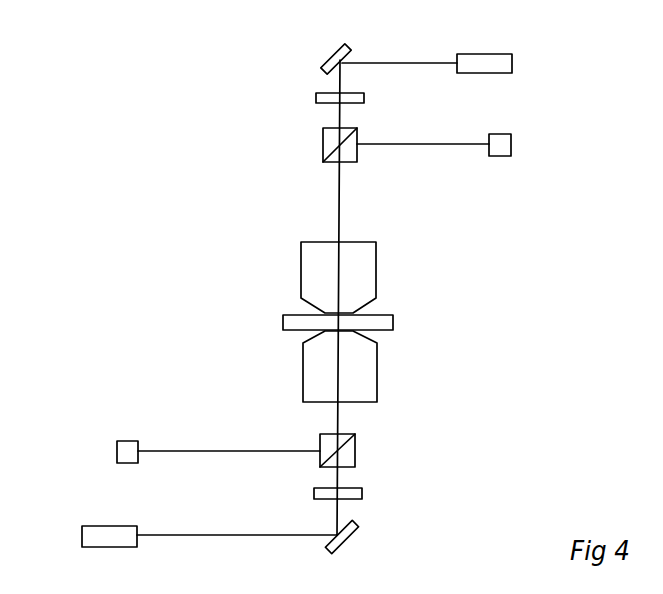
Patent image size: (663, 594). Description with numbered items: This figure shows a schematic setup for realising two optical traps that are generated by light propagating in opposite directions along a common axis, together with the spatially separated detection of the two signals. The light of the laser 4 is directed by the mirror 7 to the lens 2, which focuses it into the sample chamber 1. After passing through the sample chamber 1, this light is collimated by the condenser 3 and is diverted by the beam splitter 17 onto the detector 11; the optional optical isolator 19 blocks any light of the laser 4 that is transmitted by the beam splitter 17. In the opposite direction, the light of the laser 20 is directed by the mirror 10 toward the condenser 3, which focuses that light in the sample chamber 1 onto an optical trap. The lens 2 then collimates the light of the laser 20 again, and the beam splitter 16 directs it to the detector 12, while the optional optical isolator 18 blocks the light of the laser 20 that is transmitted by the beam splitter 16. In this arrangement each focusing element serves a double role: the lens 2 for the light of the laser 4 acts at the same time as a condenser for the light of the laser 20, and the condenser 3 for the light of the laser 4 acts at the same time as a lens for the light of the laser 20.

The sample chamber 1 is at (287, 322).
The lens 2 is at (313, 386).
The condenser 3 is at (309, 274).
The laser 4 is at (90, 535).
The mirror 7 is at (357, 537).
The mirror 10 is at (337, 58).
The detector 11 is at (505, 143).
The detector 12 is at (120, 451).
The beam splitter 16 is at (350, 452).
The beam splitter 17 is at (328, 148).
The optical isolator 18 is at (353, 494).
The optical isolator 19 is at (322, 98).
The laser 20 is at (505, 62).